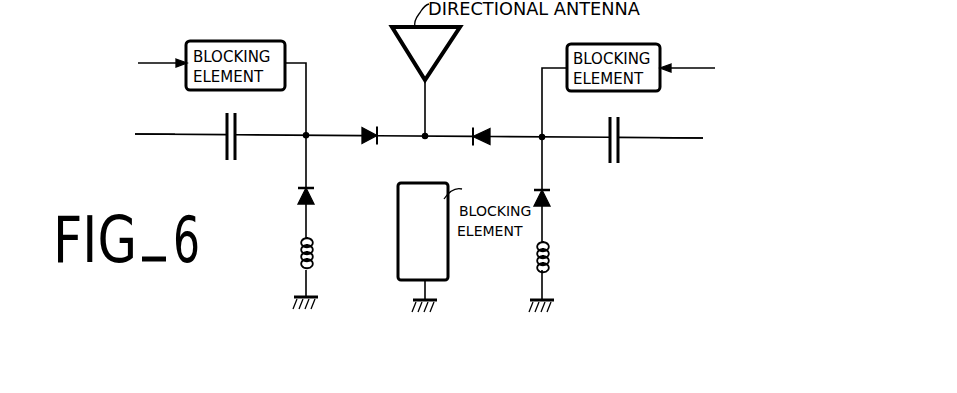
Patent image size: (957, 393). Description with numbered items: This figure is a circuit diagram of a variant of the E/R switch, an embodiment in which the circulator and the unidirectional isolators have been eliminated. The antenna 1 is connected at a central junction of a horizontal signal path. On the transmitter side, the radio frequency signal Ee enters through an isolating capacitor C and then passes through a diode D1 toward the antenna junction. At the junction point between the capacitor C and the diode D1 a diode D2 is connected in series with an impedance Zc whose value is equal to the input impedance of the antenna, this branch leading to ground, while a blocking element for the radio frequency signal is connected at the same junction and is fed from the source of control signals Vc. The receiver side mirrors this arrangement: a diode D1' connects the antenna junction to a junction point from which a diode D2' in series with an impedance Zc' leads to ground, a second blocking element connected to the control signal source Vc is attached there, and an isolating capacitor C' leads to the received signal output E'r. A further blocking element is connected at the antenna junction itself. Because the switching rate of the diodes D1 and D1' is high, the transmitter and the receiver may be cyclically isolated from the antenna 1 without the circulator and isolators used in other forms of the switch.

The antenna 1 is at (441, 38).
The diode D1 is at (365, 120).
The diode D1' is at (488, 119).
The diode D2 is at (326, 199).
The diode D2' is at (561, 204).
The isolating capacitor C is at (219, 142).
The isolating capacitor C' is at (624, 150).
The impedance Zc is at (324, 255).
The impedance Zc' is at (559, 259).
The control signal source Vc is at (439, 54).
The radio frequency signal Ee is at (137, 133).
The received signal output E'r is at (699, 137).